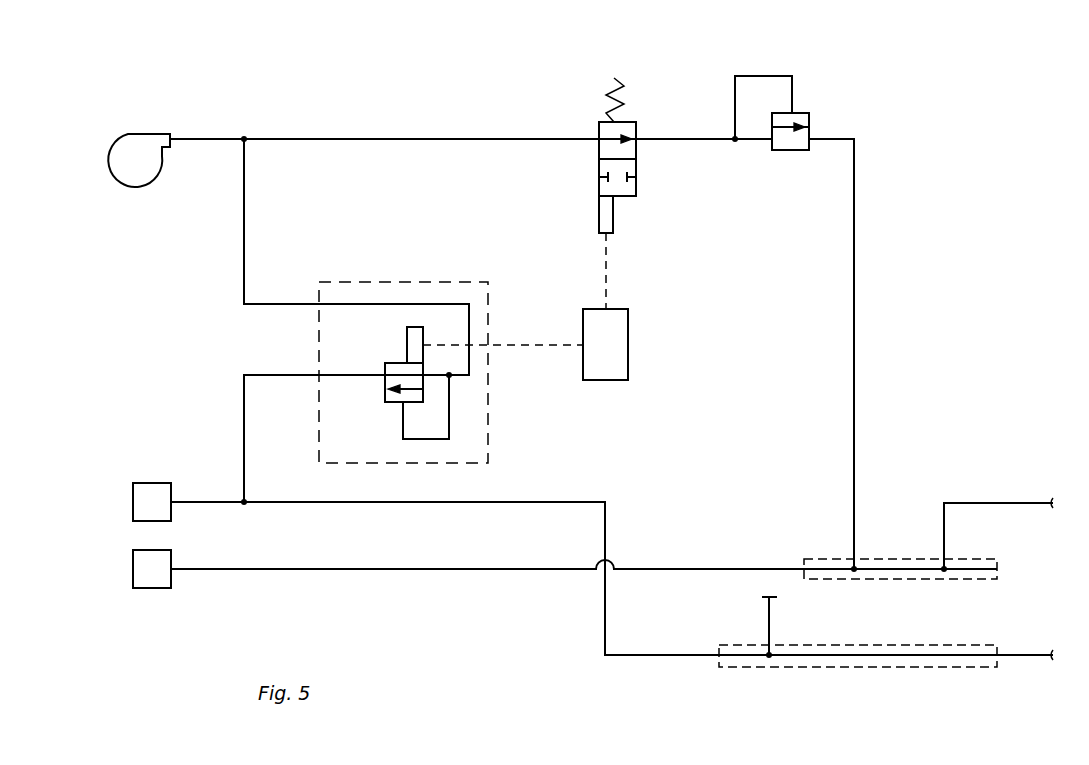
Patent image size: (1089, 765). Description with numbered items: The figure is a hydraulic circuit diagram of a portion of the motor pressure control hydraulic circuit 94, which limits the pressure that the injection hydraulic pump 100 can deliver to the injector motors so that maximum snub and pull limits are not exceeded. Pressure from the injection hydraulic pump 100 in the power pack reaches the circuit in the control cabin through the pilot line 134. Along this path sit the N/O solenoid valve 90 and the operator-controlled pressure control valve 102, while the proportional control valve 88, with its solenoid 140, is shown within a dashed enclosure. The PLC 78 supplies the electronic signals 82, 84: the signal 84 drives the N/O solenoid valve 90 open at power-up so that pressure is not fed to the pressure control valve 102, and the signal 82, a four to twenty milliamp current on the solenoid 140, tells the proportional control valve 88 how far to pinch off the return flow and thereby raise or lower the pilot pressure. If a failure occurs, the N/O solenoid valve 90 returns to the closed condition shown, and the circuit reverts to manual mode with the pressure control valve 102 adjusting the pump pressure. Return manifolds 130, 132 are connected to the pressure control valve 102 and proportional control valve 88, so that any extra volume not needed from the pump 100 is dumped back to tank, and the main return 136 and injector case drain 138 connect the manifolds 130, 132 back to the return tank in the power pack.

The motor pressure control hydraulic circuit 94 is at (148, 80).
The injection hydraulic pump 100 is at (112, 160).
The pilot line 134 is at (204, 133).
The N/O solenoid valve 90 is at (630, 197).
The pressure control valve 102 is at (791, 152).
The proportional control valve 88 is at (402, 283).
The solenoid 140 is at (406, 340).
The signal 82 is at (527, 348).
The signal 84 is at (608, 277).
The PLC 78 is at (630, 343).
The main return 136 is at (133, 502).
The injector case drain 138 is at (133, 569).
The return manifold 130 is at (898, 581).
The return manifold 132 is at (820, 668).